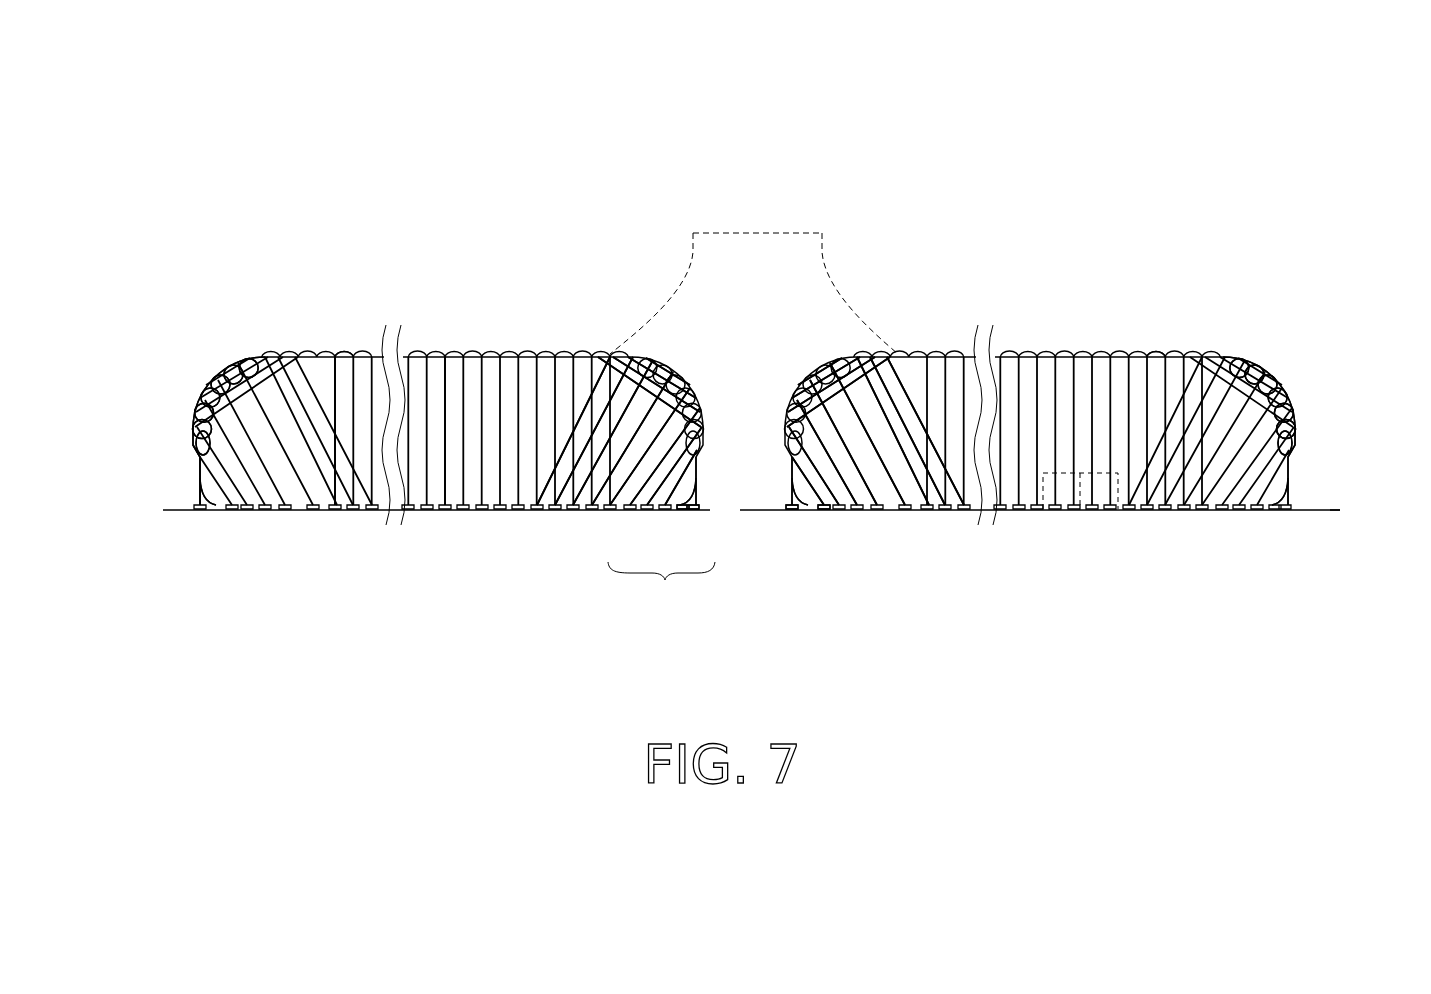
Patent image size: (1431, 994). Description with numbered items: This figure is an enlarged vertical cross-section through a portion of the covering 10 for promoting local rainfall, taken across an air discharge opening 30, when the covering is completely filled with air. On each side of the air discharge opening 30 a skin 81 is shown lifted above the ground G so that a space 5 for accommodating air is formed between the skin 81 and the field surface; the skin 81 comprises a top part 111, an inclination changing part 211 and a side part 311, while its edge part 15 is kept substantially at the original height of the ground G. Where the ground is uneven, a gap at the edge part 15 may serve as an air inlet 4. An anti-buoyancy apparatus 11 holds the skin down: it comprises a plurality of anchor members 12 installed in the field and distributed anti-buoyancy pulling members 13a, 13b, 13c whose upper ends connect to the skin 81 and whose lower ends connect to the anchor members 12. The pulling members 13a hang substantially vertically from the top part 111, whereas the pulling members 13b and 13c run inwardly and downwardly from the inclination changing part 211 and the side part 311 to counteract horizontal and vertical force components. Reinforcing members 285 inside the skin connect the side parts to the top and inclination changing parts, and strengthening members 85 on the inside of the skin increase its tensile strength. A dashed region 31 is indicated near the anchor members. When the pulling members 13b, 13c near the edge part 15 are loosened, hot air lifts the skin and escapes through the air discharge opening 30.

The covering 10 is at (186, 86).
The air inlet 4 is at (219, 511).
The space 5 is at (1007, 490).
The anti-buoyancy apparatus 11 is at (661, 595).
The anchor member 12 is at (690, 508).
The anti-buoyancy pulling member 13a is at (448, 372).
The anti-buoyancy pulling member 13b is at (586, 380).
The anti-buoyancy pulling member 13c is at (700, 510).
The edge part 15 is at (197, 487).
The air discharge opening 30 is at (765, 232).
The bonding region 31 is at (1042, 492).
The skin 81 is at (1356, 207).
The strengthening member 85 is at (346, 355).
The top part 111 is at (1157, 352).
The inclination changing part 211 is at (1265, 372).
The reinforcing member 285 is at (230, 366).
The side part 311 is at (1293, 420).
The ground G is at (750, 520).